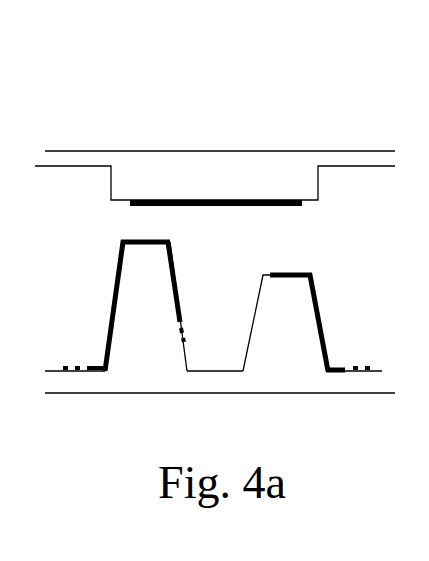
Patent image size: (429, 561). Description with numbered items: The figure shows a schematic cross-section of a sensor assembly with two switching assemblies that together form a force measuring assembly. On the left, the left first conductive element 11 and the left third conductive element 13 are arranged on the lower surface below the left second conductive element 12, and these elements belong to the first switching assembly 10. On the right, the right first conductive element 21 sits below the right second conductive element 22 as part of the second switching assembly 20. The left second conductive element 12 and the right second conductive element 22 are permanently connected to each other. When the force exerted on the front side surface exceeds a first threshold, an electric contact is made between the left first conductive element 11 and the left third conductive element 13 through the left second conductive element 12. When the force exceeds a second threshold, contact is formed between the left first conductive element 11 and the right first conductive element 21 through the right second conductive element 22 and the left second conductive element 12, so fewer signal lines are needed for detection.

The first switching assembly 10 is at (118, 132).
The second switching assembly 20 is at (291, 134).
The left second conductive element 12 is at (130, 203).
The right second conductive element 22 is at (305, 202).
The left first conductive element 11 is at (113, 298).
The left third conductive element 13 is at (182, 302).
The right first conductive element 21 is at (312, 277).